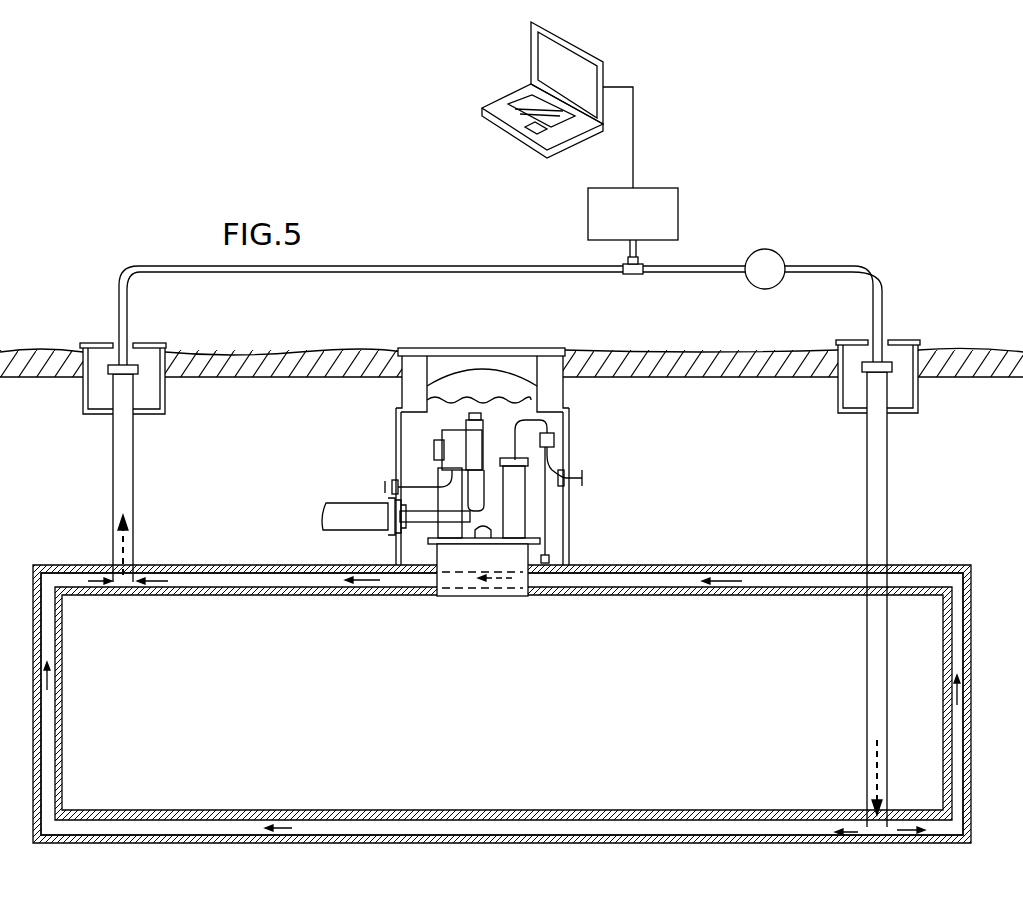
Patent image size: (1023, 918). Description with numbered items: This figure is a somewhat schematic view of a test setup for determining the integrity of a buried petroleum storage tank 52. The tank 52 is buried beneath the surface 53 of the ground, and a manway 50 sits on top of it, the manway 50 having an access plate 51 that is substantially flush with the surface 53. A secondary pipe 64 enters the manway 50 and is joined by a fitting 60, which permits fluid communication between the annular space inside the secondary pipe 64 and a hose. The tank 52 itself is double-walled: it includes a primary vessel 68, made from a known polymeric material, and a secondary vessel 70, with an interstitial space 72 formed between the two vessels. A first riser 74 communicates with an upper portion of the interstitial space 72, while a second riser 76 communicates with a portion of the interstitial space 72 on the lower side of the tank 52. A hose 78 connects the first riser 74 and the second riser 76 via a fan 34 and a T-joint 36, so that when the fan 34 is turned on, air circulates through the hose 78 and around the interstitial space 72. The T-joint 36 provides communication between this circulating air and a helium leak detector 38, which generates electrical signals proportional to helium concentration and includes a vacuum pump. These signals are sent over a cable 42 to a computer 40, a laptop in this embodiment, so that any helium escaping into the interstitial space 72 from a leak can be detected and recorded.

The fan 34 is at (765, 249).
The T-joint 36 is at (633, 276).
The helium leak detector 38 is at (646, 223).
The computer 40 is at (530, 50).
The cable 42 is at (633, 135).
The manway 50 is at (572, 445).
The access plate 51 is at (482, 348).
The petroleum storage tank 52 is at (699, 564).
The ground surface 53 is at (290, 351).
The fitting 60 is at (407, 540).
The secondary pipe 64 is at (357, 503).
The primary vessel 68 is at (208, 589).
The secondary vessel 70 is at (285, 579).
The interstitial space 72 is at (73, 578).
The first riser 74 is at (113, 478).
The second riser 76 is at (867, 478).
The hose 78 is at (387, 266).